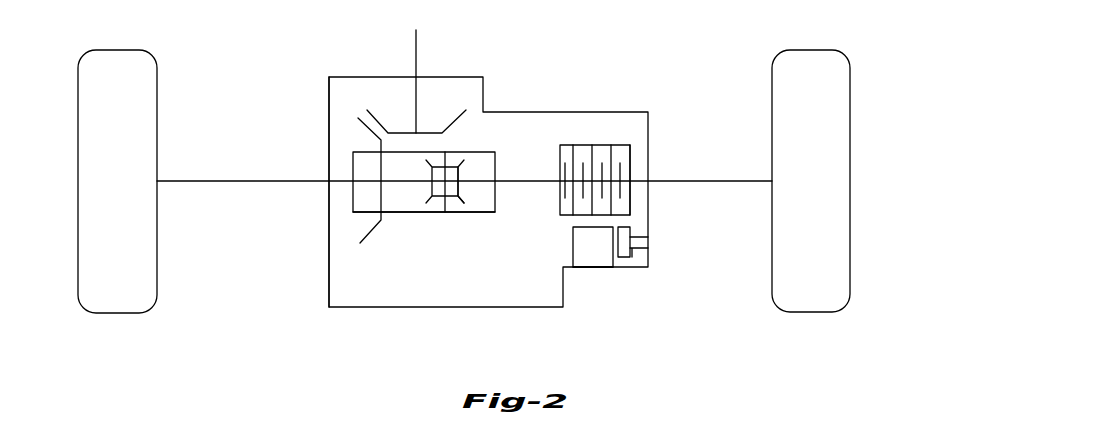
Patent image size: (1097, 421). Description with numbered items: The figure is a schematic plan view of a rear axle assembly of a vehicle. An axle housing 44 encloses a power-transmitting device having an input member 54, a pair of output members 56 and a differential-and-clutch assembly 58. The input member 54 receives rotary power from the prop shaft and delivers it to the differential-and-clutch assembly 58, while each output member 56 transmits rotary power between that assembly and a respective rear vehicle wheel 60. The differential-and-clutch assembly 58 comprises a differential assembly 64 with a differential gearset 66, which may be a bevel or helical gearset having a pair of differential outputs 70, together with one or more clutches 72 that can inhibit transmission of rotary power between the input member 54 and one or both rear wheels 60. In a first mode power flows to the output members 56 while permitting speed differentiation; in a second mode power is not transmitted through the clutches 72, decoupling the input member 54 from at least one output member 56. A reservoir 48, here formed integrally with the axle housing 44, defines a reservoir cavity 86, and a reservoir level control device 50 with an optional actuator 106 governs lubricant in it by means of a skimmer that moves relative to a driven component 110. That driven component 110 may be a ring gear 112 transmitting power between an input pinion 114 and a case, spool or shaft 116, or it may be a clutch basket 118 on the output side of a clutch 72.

The axle housing 44 is at (329, 87).
The reservoir 48 is at (582, 257).
The reservoir level control device 50 is at (627, 250).
The input member 54 is at (418, 42).
The output members 56 is at (195, 180).
The differential-and-clutch assembly 58 is at (524, 104).
The rear vehicle wheels 60 is at (95, 60).
The differential assembly 64 is at (434, 222).
The differential gearset 66 is at (478, 205).
The differential outputs 70 is at (463, 167).
The clutches 72 is at (610, 128).
The reservoir cavity 86 is at (598, 248).
The actuator 106 is at (647, 257).
The driven component 110 is at (683, 143).
The ring gear 112 is at (360, 243).
The input pinion 114 is at (378, 113).
The case, spool or shaft 116 is at (463, 213).
The clutch basket 118 is at (632, 157).